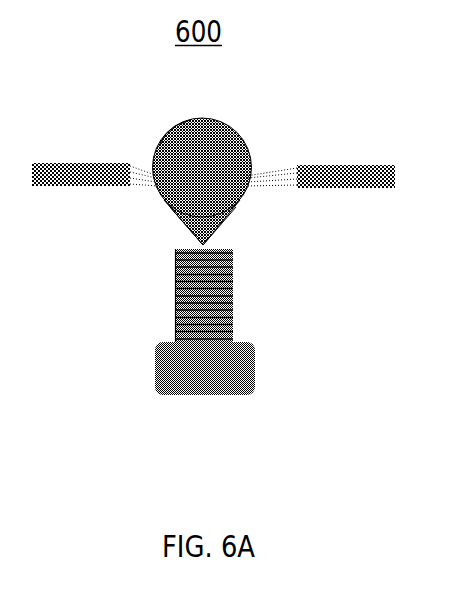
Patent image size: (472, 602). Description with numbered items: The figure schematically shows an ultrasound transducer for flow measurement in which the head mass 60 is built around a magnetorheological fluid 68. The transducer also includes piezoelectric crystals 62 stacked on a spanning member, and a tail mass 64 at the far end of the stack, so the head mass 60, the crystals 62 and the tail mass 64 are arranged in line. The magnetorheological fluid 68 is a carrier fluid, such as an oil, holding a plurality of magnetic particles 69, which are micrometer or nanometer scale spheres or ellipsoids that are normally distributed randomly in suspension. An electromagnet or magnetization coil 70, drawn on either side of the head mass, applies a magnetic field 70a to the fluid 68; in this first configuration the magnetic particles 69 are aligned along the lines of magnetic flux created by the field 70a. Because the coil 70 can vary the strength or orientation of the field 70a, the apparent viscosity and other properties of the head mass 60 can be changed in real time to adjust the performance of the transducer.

The head mass 60 is at (248, 142).
The magnetorheological fluid 68 is at (175, 128).
The magnetic particles 69 is at (198, 212).
The electromagnet or magnetization coil 70 is at (58, 186).
The magnetic field 70a is at (280, 190).
The piezoelectric crystals 62 is at (233, 302).
The tail mass 64 is at (247, 397).